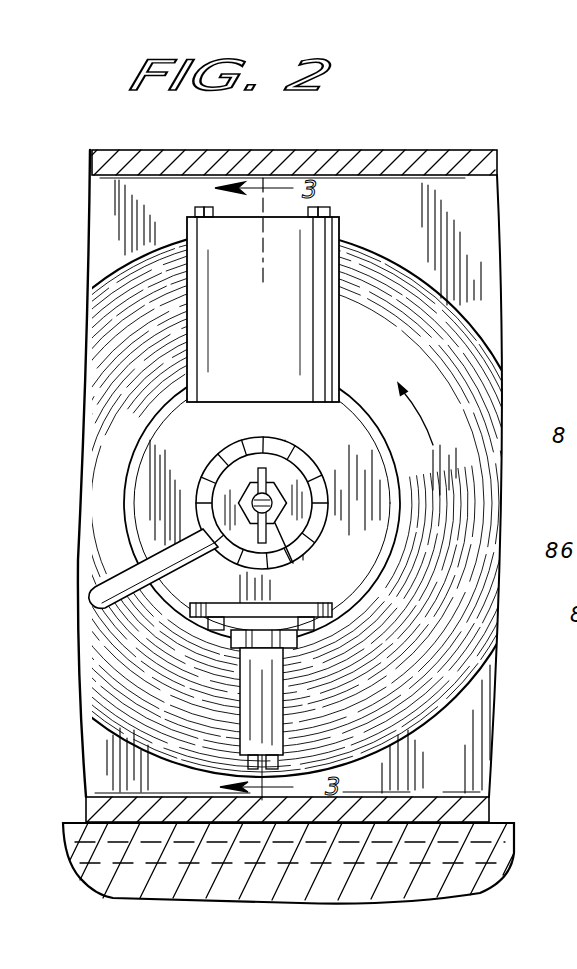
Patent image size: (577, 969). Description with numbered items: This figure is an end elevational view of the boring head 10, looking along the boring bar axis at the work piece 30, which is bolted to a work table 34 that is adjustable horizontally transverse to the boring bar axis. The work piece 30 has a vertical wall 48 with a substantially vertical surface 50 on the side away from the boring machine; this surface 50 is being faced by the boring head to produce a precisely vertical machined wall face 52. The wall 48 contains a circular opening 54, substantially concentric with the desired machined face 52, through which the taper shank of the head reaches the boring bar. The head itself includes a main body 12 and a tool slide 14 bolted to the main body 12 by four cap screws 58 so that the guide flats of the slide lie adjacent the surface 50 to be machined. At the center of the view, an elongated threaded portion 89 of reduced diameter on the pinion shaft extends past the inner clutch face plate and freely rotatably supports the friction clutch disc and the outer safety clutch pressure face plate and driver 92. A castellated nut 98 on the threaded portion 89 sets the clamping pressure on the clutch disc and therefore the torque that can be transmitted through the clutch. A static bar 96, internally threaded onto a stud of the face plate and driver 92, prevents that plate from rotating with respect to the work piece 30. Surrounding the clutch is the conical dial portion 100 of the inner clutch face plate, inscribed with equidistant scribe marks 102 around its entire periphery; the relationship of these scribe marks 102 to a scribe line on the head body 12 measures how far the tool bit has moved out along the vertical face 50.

The boring head 10 is at (346, 391).
The main body 12 is at (379, 509).
The tool slide 14 is at (283, 316).
The work piece 30 is at (470, 172).
The work table 34 is at (487, 837).
The vertical wall 48 is at (478, 247).
The vertical surface 50 is at (462, 335).
The machined wall face 52 is at (463, 398).
The circular opening 54 is at (383, 547).
The cap screws 58 is at (333, 207).
The elongated threaded portion 89 is at (268, 492).
The outer safety clutch pressure face plate and driver 92 is at (310, 504).
The static bar 96 is at (140, 593).
The castellated nut 98 is at (295, 564).
The dial portion 100 is at (212, 463).
The scribe marks 102 is at (265, 433).